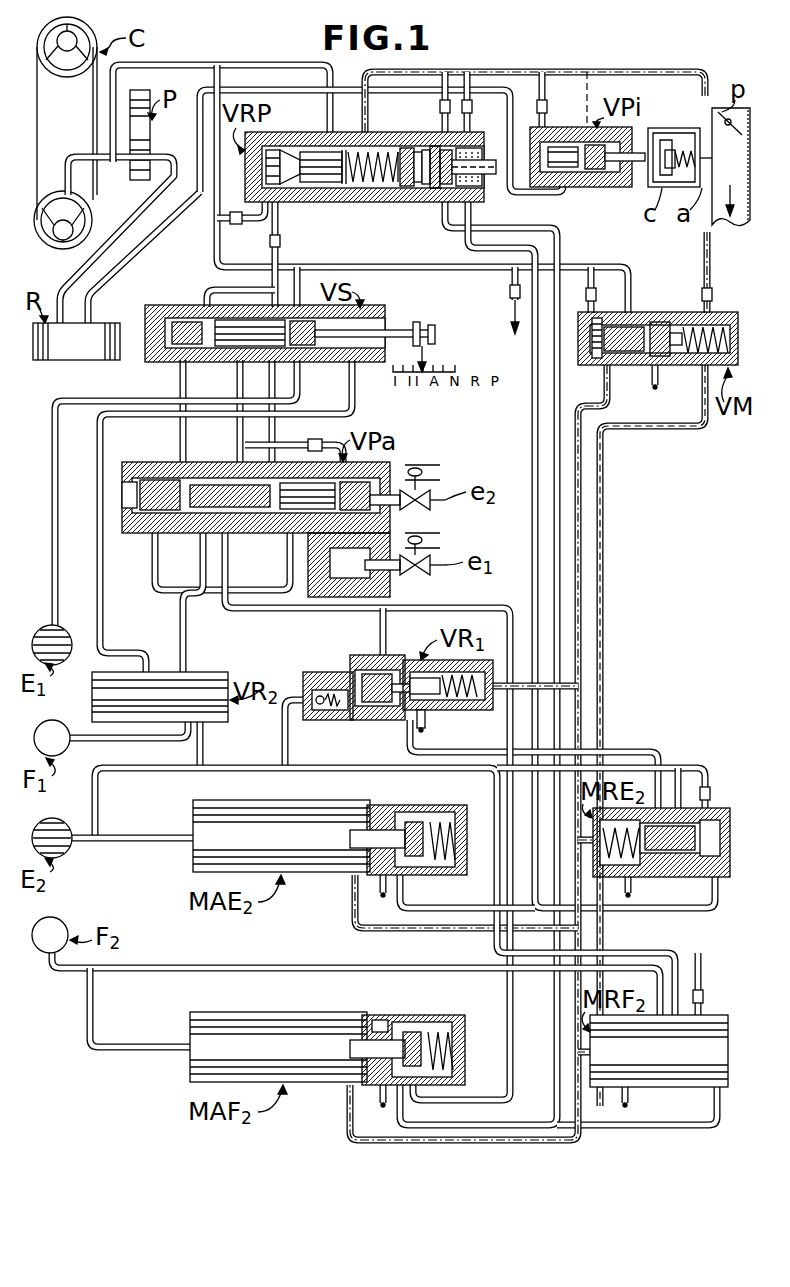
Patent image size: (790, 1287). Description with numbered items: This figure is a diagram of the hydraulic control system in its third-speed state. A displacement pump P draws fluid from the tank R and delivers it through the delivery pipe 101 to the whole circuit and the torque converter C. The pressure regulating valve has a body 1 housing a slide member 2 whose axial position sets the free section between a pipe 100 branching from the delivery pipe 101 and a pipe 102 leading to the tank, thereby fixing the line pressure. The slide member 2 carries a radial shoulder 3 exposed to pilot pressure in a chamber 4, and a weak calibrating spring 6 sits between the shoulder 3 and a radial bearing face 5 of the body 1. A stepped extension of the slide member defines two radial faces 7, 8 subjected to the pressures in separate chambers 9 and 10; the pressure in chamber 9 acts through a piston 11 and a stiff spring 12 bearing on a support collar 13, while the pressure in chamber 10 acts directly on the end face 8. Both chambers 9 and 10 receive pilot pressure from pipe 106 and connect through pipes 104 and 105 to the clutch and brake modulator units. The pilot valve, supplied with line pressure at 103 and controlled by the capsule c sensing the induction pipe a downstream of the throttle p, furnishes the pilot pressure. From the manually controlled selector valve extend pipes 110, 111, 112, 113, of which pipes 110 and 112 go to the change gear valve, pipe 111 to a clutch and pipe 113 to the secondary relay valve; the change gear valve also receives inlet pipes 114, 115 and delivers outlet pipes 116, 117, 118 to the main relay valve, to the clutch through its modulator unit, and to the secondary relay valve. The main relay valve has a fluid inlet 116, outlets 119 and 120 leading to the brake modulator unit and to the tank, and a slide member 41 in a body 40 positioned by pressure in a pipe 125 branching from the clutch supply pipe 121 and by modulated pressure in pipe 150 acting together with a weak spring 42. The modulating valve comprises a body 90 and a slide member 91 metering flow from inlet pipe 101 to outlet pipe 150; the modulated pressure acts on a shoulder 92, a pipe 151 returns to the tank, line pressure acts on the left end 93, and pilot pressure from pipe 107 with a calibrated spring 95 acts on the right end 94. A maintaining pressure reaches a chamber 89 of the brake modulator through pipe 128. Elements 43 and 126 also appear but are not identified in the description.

The body 1 is at (318, 200).
The slide member 2 is at (300, 150).
The radial shoulder 3 is at (330, 152).
The chamber 4 is at (345, 195).
The radial bearing face 5 is at (390, 195).
The calibrating spring 6 is at (368, 195).
The radial face 7 is at (405, 148).
The end face 8 is at (496, 170).
The chamber 9 is at (444, 195).
The second chamber 10 is at (480, 148).
The piston 11 is at (426, 195).
The stiff spring 12 is at (432, 146).
The support flange or collar 13 is at (418, 195).
The body 40 is at (395, 655).
The slide member 41 is at (382, 720).
The weak spring 42 is at (475, 705).
The check valve 43 is at (345, 662).
The chamber 89 is at (398, 1020).
The body 90 is at (676, 358).
The slide member 91 is at (645, 326).
The shoulder 92 is at (614, 290).
The left end 93 is at (594, 352).
The right end 94 is at (672, 325).
The calibrated spring 95 is at (720, 326).
The pipe 100 is at (240, 64).
The delivery pipe 101 is at (213, 200).
The exhaust pipe 102 is at (270, 88).
The line pressure supply 103 is at (445, 75).
The pipe 104 is at (545, 250).
The pipe 105 is at (535, 230).
The pilot pressure pipe 106 is at (535, 70).
The pipe 107 is at (706, 245).
The pipe 110 is at (282, 404).
The pipe 111 is at (105, 400).
The pipe 112 is at (282, 380).
The pipe 113 is at (345, 400).
The inlet pipe 114 is at (178, 450).
The inlet pipe 115 is at (236, 452).
The outlet pipe 116 is at (198, 580).
The outlet pipe 117 is at (245, 578).
The outlet pipe 118 is at (178, 628).
The outlet 119 is at (480, 805).
The outlet 120 is at (424, 728).
The supply pipe 121 is at (212, 766).
The pipe 125 is at (290, 735).
The pipe 126 is at (222, 967).
The pipe 128 is at (505, 1028).
The modulated pressure pipe 150 is at (650, 420).
The pipe 151 is at (658, 392).